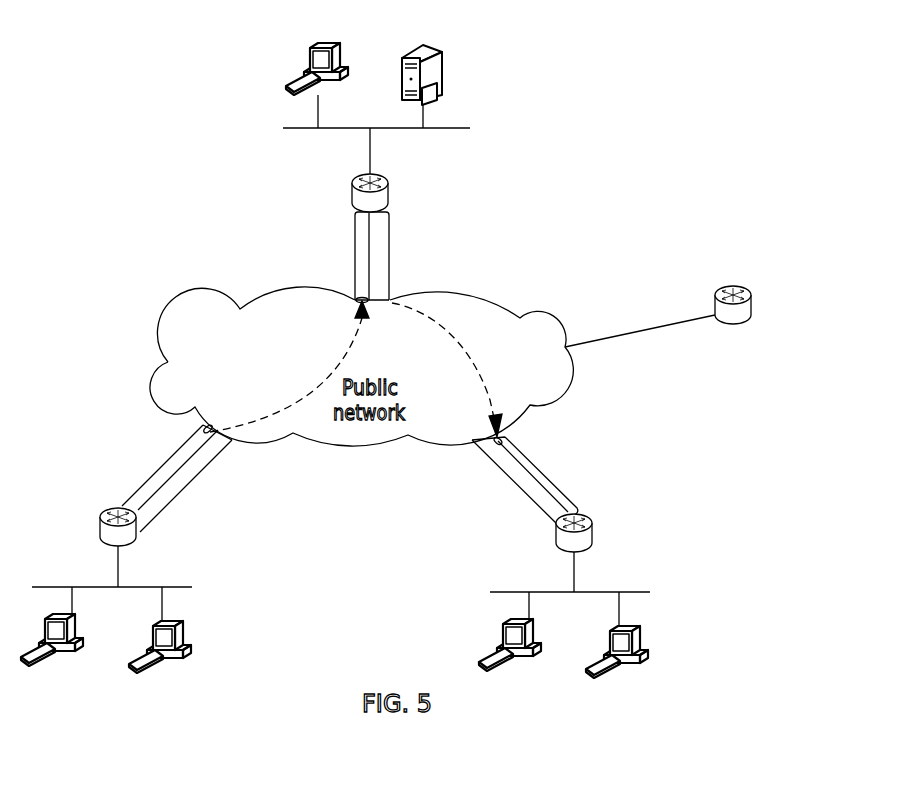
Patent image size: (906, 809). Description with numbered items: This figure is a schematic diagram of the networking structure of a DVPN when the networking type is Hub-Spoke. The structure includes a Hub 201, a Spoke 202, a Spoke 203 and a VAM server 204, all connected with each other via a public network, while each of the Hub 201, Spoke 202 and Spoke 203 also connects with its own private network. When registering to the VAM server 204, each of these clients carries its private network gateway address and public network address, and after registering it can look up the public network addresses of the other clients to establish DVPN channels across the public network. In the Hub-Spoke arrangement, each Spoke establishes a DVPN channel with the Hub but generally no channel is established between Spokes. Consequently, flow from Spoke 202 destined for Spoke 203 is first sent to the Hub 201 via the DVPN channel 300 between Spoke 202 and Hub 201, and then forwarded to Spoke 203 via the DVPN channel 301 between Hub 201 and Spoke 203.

The Hub 201 is at (388, 200).
The Spoke 202 is at (137, 535).
The Spoke 203 is at (592, 540).
The VAM server 204 is at (742, 284).
The DVPN channel 300 is at (320, 387).
The DVPN channel 301 is at (483, 370).